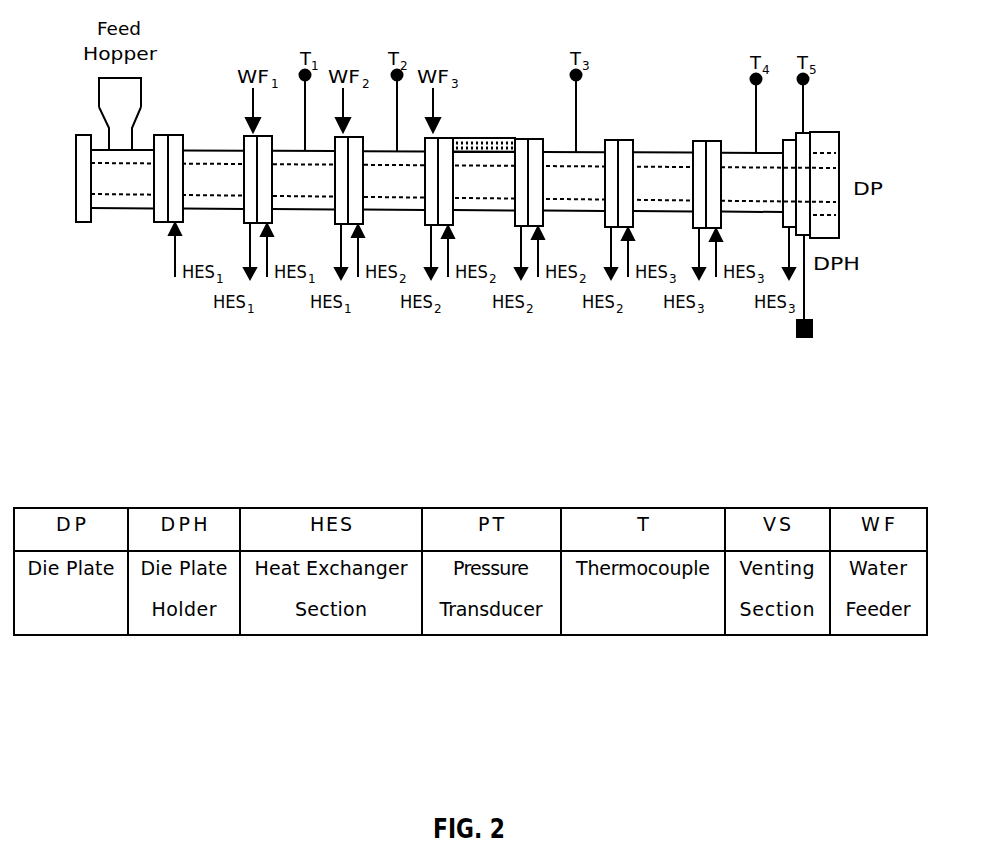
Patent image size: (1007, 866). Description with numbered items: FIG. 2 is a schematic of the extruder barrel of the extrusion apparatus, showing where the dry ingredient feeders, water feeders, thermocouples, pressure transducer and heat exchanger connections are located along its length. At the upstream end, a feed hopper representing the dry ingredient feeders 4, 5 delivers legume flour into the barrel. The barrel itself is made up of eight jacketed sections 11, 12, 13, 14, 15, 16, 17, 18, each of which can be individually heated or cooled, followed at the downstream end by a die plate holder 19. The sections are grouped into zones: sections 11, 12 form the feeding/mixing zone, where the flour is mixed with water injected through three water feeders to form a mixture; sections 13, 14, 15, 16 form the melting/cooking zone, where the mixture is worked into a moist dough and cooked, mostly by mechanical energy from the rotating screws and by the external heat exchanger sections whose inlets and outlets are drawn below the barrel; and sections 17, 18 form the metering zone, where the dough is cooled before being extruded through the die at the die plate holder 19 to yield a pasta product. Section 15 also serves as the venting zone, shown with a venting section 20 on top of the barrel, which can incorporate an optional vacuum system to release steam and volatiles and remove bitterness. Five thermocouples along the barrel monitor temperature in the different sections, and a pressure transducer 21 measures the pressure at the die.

The dry ingredient feeder 4 is at (91, 92).
The dry ingredient feeder 5 is at (112, 117).
The jacketed barrel section 11 is at (122, 179).
The jacketed barrel section 12 is at (213, 179).
The jacketed barrel section 13 is at (303, 180).
The jacketed barrel section 14 is at (393, 180).
The jacketed barrel section 15 is at (484, 181).
The jacketed barrel section 16 is at (574, 181).
The jacketed barrel section 17 is at (663, 181).
The jacketed barrel section 18 is at (752, 182).
The die plate holder 19 is at (824, 185).
The venting section 20 is at (487, 131).
The pressure transducer 21 is at (818, 301).